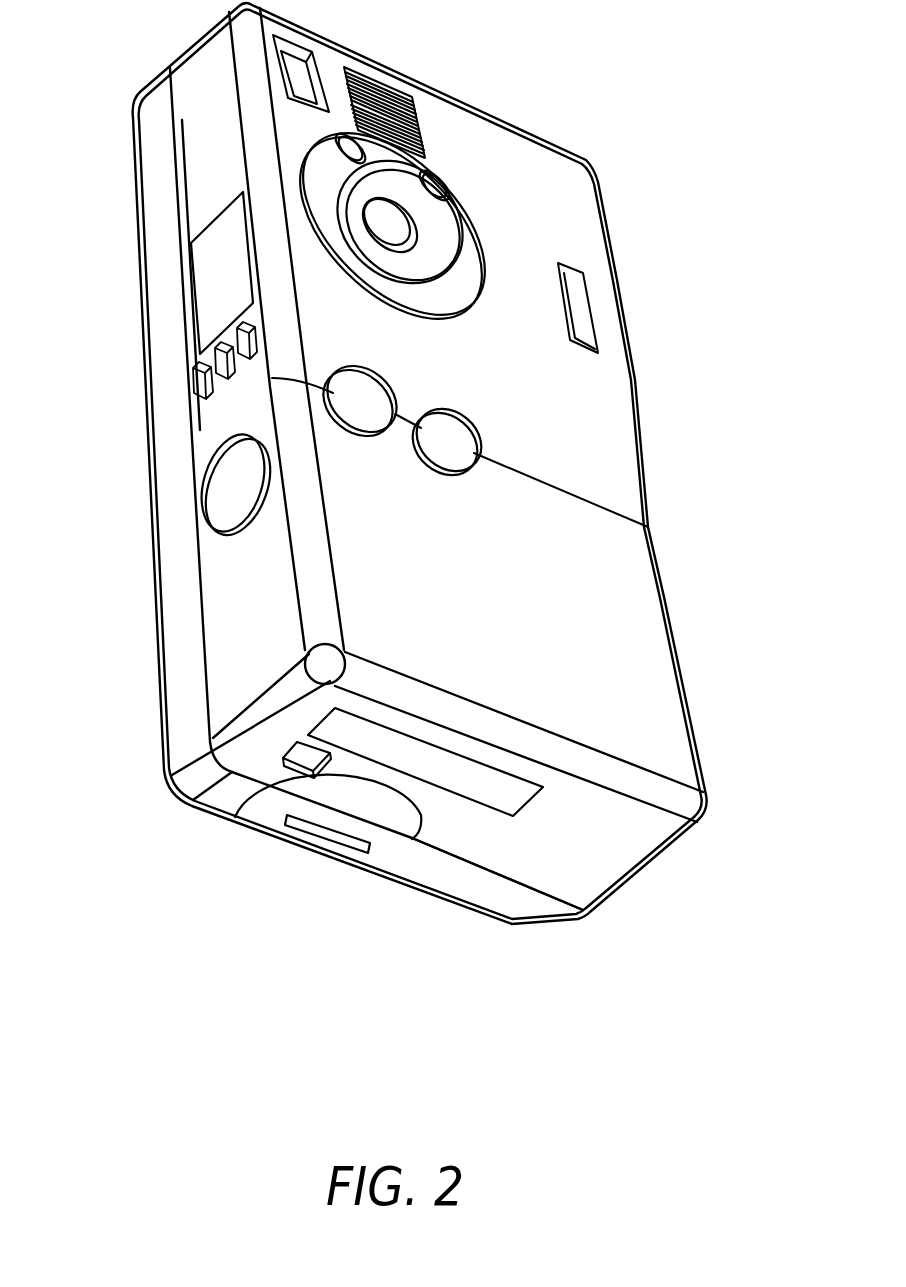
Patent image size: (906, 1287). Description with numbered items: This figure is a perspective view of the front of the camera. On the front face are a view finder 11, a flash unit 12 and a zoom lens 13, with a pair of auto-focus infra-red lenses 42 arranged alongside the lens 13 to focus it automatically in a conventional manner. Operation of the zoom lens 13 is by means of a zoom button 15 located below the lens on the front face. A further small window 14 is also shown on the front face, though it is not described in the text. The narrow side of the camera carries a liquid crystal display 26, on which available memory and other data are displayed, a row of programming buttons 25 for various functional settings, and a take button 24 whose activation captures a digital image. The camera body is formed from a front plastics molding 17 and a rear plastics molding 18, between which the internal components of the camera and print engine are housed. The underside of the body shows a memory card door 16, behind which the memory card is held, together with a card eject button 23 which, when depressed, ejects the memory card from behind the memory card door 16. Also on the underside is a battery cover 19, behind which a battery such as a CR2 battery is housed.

The view finder 11 is at (303, 83).
The flash unit 12 is at (407, 100).
The zoom lens 13 is at (440, 191).
The auto-focus infra-red lenses 42 is at (390, 234).
The sensor window 14 is at (583, 311).
The zoom button 15 is at (375, 397).
The memory card door 16 is at (500, 790).
The front plastics molding 17 is at (622, 855).
The rear plastics molding 18 is at (530, 903).
The battery cover 19 is at (377, 823).
The card eject button 23 is at (300, 772).
The take button 24 is at (218, 487).
The programming buttons 25 is at (193, 383).
The liquid crystal display 26 is at (213, 283).